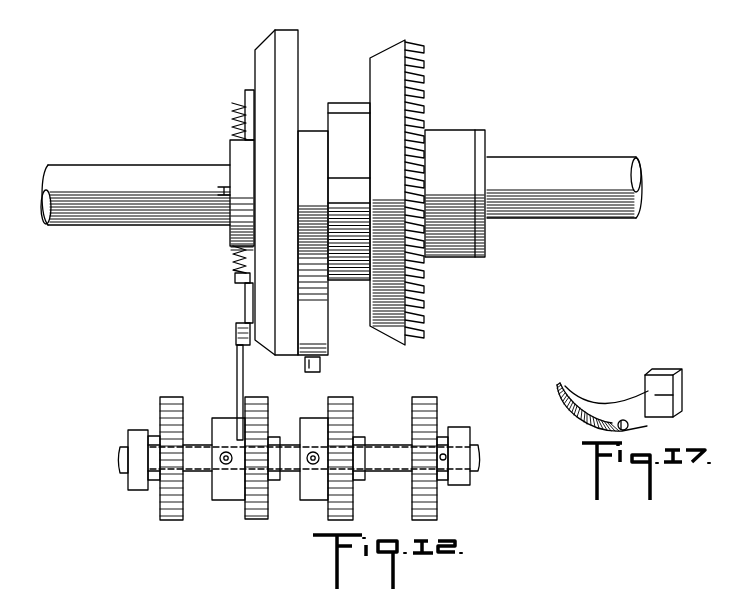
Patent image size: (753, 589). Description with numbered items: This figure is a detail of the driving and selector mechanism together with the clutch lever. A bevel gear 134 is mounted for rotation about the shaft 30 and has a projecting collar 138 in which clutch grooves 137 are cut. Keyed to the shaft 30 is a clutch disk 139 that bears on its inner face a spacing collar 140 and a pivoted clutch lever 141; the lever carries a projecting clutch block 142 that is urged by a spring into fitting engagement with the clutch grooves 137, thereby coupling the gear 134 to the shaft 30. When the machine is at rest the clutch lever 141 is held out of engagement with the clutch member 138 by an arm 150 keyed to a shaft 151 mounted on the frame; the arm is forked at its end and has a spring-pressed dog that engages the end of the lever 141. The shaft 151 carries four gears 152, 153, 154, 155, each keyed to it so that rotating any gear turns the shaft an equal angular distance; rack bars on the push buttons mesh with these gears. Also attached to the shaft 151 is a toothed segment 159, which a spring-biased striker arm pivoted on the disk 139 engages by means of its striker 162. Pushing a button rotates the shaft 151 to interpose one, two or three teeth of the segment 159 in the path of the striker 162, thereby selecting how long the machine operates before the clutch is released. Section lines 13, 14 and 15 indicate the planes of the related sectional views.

In FIG. 12, the section line 13- 13 is at (204, 78).
In FIG. 12, the section line 14- 14 is at (328, 80).
In FIG. 12, the section line 15- 15 is at (300, 55).
In FIG. 12, the shaft 30 is at (85, 167).
In FIG. 12, the bevel gear 134 is at (388, 54).
In FIG. 12, the clutch grooves 137 is at (340, 190).
In FIG. 12, the projecting collar 138 is at (342, 120).
In FIG. 12, the clutch disk 139 is at (230, 230).
In FIG. 12, the spacing collar 140 is at (312, 140).
In FIG. 12, the clutch lever 141 is at (315, 341).
In FIG. 17, the clutch lever 141 is at (592, 402).
In FIG. 17, the clutch block 142 is at (666, 396).
In FIG. 12, the arm 150 is at (311, 406).
In FIG. 12, the shaft 151 is at (380, 448).
In FIG. 12, the gear 152 is at (168, 398).
In FIG. 12, the gear 153 is at (256, 512).
In FIG. 12, the gear 154 is at (340, 398).
In FIG. 12, the gear 155 is at (425, 398).
In FIG. 12, the toothed segment 159 is at (240, 360).
In FIG. 12, the striker 162 is at (238, 325).